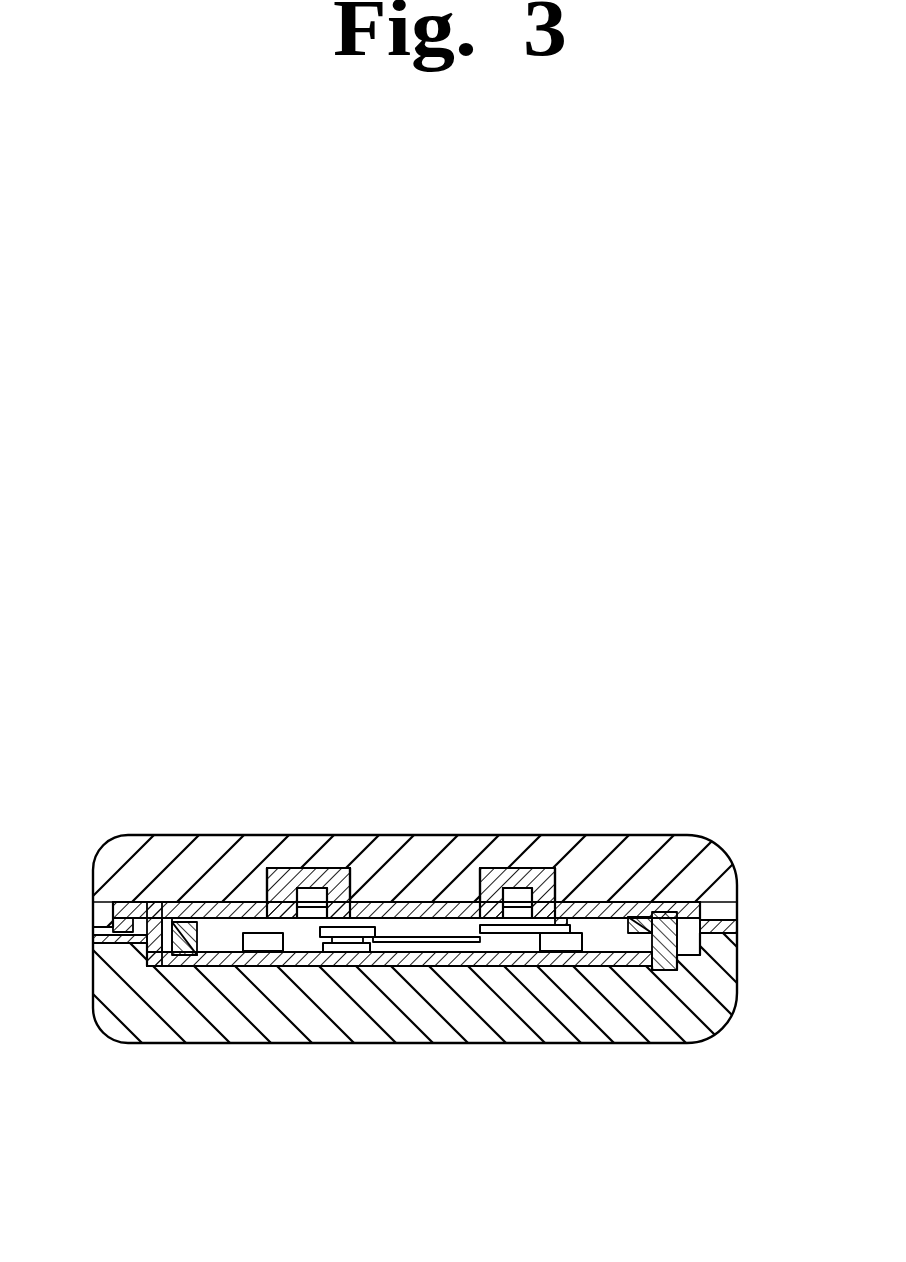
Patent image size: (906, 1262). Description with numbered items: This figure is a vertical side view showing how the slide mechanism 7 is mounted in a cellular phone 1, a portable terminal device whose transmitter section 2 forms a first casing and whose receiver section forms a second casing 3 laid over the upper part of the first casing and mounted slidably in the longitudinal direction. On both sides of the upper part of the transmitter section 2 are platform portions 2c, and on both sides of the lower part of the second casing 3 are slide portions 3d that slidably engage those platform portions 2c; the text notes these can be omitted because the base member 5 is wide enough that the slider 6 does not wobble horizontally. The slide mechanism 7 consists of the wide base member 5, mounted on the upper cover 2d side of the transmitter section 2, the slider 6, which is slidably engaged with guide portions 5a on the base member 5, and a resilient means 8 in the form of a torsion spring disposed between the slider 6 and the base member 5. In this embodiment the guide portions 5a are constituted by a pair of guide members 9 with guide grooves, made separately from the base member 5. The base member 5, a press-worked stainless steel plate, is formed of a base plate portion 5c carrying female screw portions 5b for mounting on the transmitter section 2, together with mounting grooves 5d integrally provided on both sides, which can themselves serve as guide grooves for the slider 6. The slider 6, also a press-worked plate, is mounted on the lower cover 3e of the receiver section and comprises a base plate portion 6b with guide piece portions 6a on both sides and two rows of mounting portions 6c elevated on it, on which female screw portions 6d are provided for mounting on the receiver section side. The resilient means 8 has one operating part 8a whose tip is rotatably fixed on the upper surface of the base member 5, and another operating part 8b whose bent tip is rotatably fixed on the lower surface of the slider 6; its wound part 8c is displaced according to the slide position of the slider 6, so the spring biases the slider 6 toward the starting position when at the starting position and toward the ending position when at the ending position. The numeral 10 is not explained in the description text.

The cellular phone 1 is at (723, 812).
The transmitter section 2 is at (433, 1045).
The platform portions 2c is at (95, 938).
The upper cover 2d is at (368, 966).
The second casing 3 is at (444, 824).
The slide portions 3d is at (112, 915).
The lower cover 3e is at (367, 873).
The base member 5 is at (524, 965).
The guide portions 5a is at (138, 944).
The female screw portions 5b is at (265, 950).
The base plate portion 5c is at (297, 955).
The mounting grooves 5d is at (157, 902).
The slider 6 is at (464, 900).
The guide piece portions 6a is at (192, 955).
The base plate portion 6b is at (410, 908).
The mounting portions 6c is at (279, 868).
The female screw portions 6d is at (310, 900).
The slide mechanism 7 is at (226, 944).
The resilient means 8 is at (543, 940).
The operating part 8a is at (380, 958).
The operating part 8b is at (576, 915).
The wound part 8c is at (476, 942).
The guide members 9 is at (178, 910).
The side wall 10 is at (175, 958).